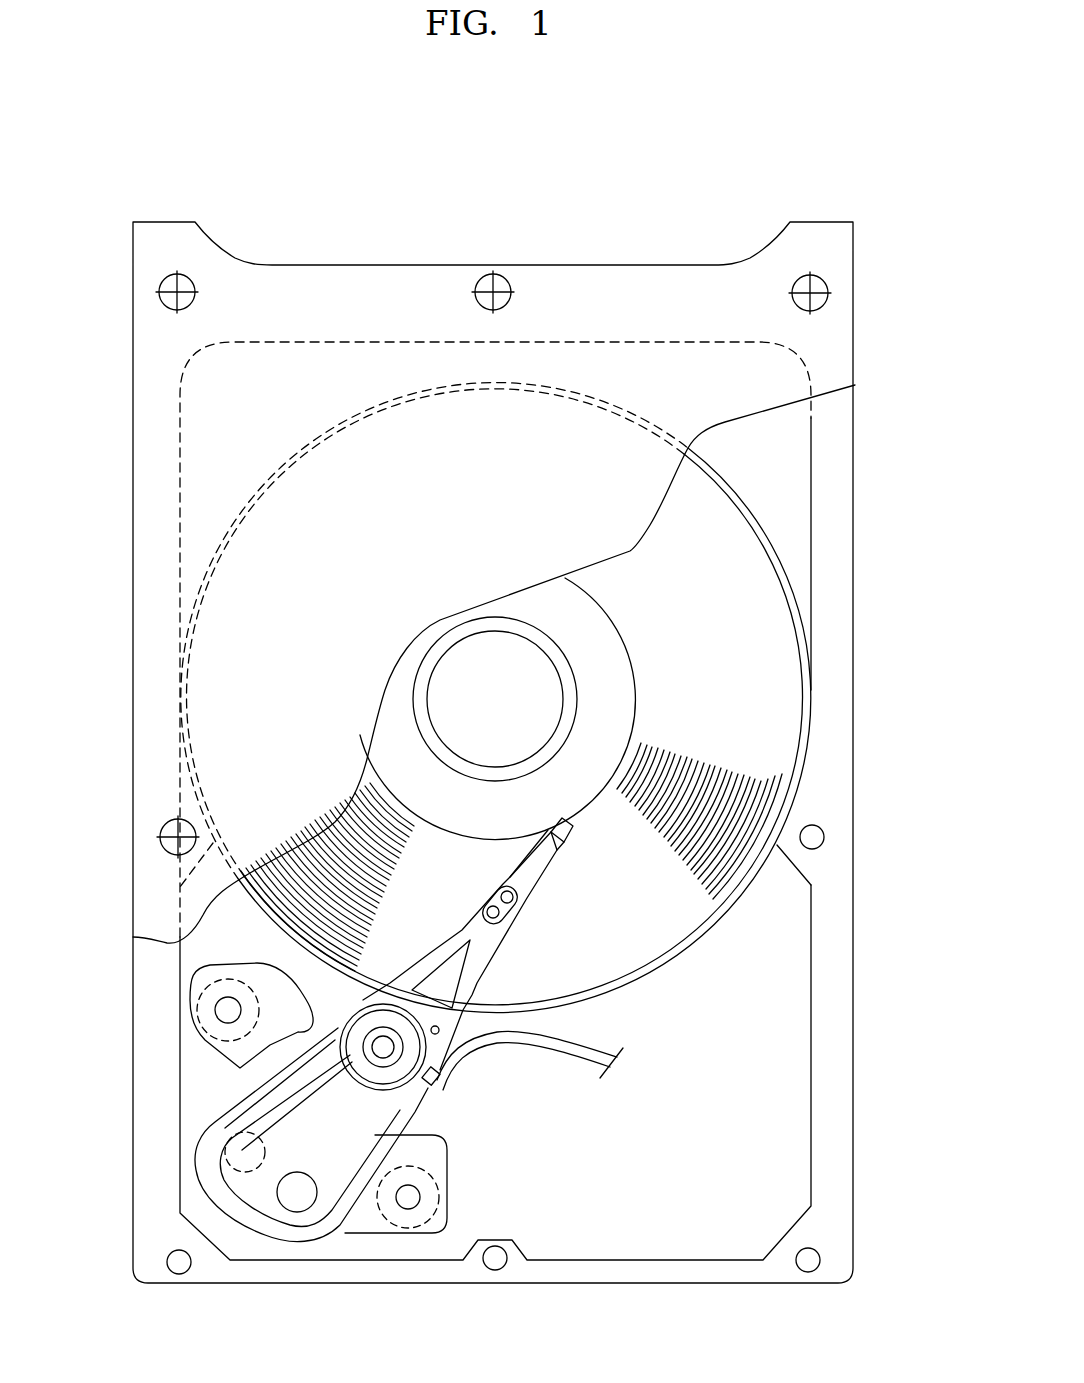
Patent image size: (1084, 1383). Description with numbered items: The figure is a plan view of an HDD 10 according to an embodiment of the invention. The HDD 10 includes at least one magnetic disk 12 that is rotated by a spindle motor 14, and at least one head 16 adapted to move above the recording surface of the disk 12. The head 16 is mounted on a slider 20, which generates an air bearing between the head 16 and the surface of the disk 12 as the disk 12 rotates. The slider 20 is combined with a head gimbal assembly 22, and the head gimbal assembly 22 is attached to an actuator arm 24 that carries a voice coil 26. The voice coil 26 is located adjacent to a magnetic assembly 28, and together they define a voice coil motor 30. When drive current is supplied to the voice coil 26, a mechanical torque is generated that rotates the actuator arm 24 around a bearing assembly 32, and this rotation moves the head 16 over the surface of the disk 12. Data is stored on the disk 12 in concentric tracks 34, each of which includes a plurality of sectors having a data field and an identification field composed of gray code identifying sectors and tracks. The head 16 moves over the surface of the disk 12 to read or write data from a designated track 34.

The HDD 10 is at (638, 192).
The magnetic disk 12 is at (762, 630).
The spindle motor 14 is at (470, 673).
The head 16 is at (565, 836).
The slider 20 is at (545, 852).
The head gimbal assembly 22 is at (494, 956).
The actuator arm 24 is at (290, 1068).
The voice coil 26 is at (227, 1137).
The magnetic assembly 28 is at (228, 1083).
The voice coil motor 30 is at (352, 1213).
The bearing assembly 32 is at (398, 1062).
The tracks 34 is at (312, 855).